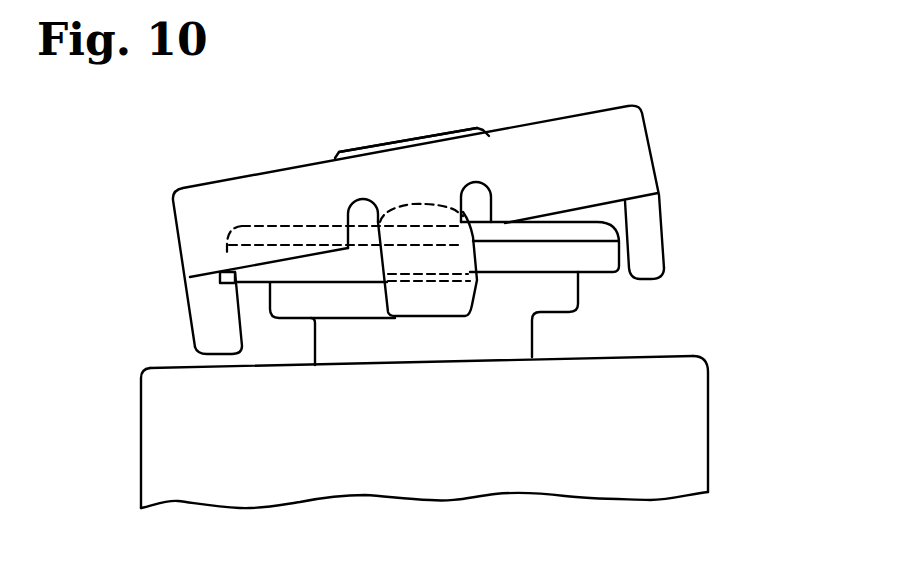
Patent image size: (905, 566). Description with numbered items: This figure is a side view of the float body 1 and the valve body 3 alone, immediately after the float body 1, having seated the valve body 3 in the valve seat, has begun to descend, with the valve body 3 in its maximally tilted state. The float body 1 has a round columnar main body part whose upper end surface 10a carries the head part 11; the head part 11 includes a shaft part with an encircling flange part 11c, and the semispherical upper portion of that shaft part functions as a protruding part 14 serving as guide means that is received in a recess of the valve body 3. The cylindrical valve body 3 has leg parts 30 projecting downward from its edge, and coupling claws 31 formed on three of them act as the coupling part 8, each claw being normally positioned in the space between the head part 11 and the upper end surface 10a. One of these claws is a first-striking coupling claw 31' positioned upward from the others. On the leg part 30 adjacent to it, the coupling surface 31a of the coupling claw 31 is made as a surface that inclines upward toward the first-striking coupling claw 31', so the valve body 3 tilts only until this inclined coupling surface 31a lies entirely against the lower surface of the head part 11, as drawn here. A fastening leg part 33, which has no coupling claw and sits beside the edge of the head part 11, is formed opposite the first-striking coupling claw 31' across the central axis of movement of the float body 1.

The float body 1 is at (464, 390).
The valve body 3 is at (460, 195).
The coupling part 8 is at (216, 318).
The upper end surface of main body part 10a is at (643, 356).
The head part 11 is at (513, 235).
The encircling flange part 11c is at (578, 238).
The protruding part 14 is at (417, 212).
The leg part 30 is at (430, 258).
The coupling claw 31 is at (315, 300).
The first-striking coupling claw 31' is at (315, 300).
The coupling surface 31a is at (230, 278).
The fastening leg part 33 is at (661, 262).